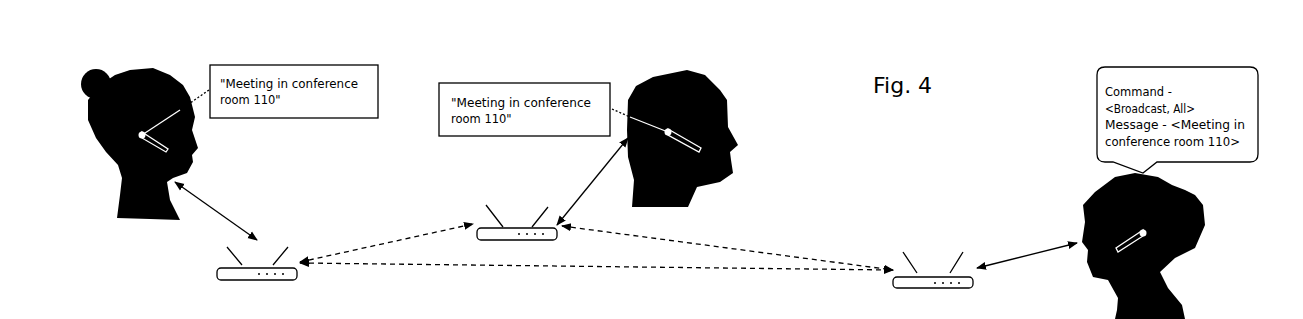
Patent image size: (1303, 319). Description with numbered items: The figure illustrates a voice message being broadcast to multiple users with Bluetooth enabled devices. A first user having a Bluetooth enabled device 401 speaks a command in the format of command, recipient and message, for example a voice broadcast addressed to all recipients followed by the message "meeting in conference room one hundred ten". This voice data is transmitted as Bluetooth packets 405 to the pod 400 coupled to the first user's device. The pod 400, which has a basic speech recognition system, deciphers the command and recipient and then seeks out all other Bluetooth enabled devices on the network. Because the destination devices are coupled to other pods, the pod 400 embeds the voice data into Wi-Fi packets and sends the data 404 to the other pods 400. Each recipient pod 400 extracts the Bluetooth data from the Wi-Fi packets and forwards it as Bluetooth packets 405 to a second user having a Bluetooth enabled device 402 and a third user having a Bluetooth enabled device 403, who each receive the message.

The pod 400 is at (217, 271).
The first user having a Bluetooth enabled device 401 is at (1202, 238).
The second user having a Bluetooth enabled device 402 is at (727, 99).
The third user having a Bluetooth enabled device 403 is at (108, 163).
The data 404 is at (418, 237).
The Bluetooth packets 405 is at (220, 212).